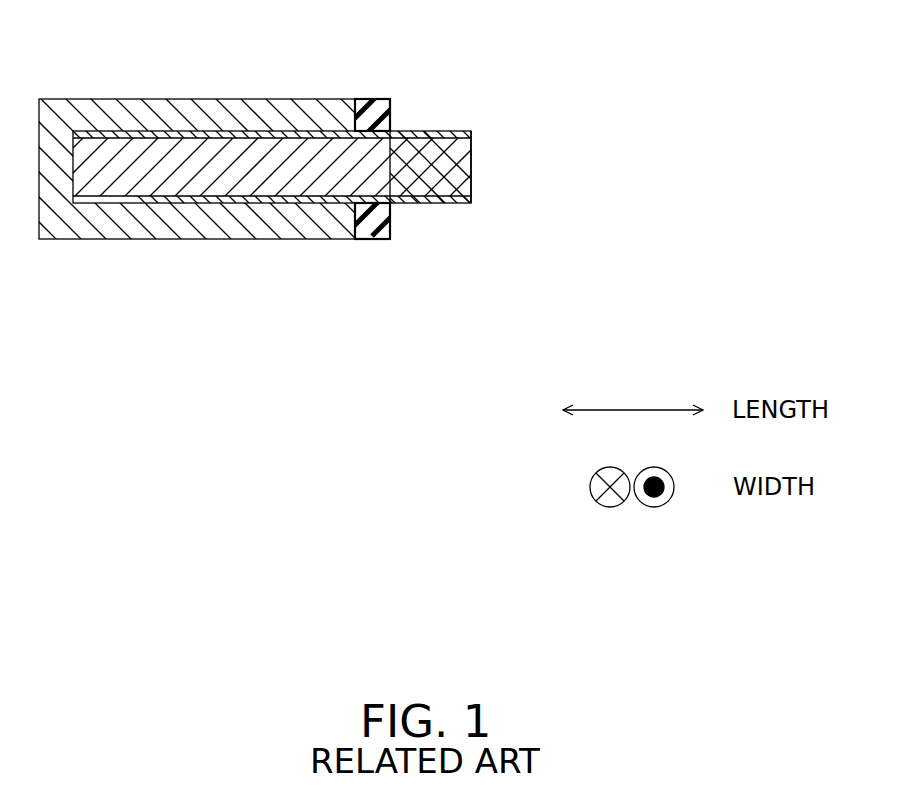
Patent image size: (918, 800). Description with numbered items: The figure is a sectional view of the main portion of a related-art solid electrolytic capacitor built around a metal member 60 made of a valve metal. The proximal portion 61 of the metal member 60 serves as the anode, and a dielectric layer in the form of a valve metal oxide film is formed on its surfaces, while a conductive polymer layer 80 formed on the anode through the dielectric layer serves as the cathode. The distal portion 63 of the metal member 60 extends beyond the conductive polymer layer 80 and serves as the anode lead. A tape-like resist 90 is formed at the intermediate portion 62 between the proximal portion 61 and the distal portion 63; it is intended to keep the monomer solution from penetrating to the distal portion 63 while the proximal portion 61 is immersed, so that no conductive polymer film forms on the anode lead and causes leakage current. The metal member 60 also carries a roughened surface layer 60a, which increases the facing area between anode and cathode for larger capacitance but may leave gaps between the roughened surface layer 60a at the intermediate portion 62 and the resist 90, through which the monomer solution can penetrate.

The metal member 60 is at (298, 215).
The roughened surface layer 60a is at (466, 131).
The proximal portion 61 is at (210, 168).
The intermediate portion 62 is at (377, 168).
The distal portion 63 is at (453, 183).
The conductive polymer layer 80 is at (195, 99).
The resist 90 is at (368, 99).